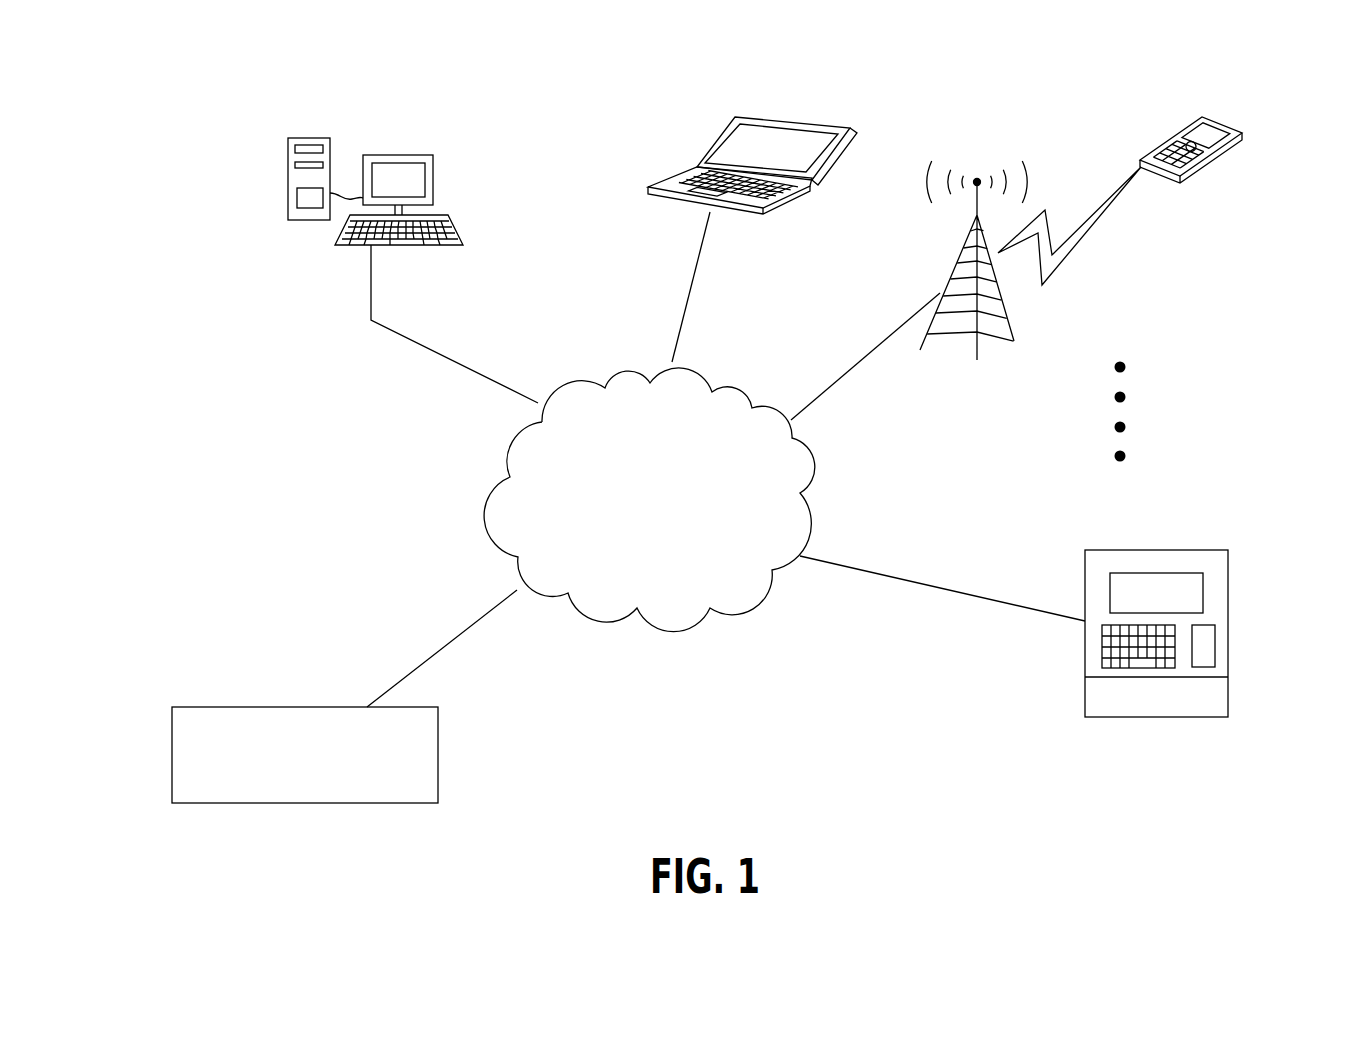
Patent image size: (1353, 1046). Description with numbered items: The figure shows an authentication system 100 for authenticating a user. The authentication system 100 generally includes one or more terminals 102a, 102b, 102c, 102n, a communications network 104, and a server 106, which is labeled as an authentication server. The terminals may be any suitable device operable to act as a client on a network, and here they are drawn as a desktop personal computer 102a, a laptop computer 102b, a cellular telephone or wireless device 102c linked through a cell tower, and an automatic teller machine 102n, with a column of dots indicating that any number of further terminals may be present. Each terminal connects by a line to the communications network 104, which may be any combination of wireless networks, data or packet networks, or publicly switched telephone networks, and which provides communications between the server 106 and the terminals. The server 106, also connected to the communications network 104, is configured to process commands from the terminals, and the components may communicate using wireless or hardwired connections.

The authentication system 100 is at (316, 411).
The terminal 102a is at (386, 152).
The terminal 102b is at (786, 120).
The terminal 102c is at (1218, 119).
The terminal 102n is at (1147, 717).
The communications network 104 is at (745, 613).
The server 106 is at (438, 772).